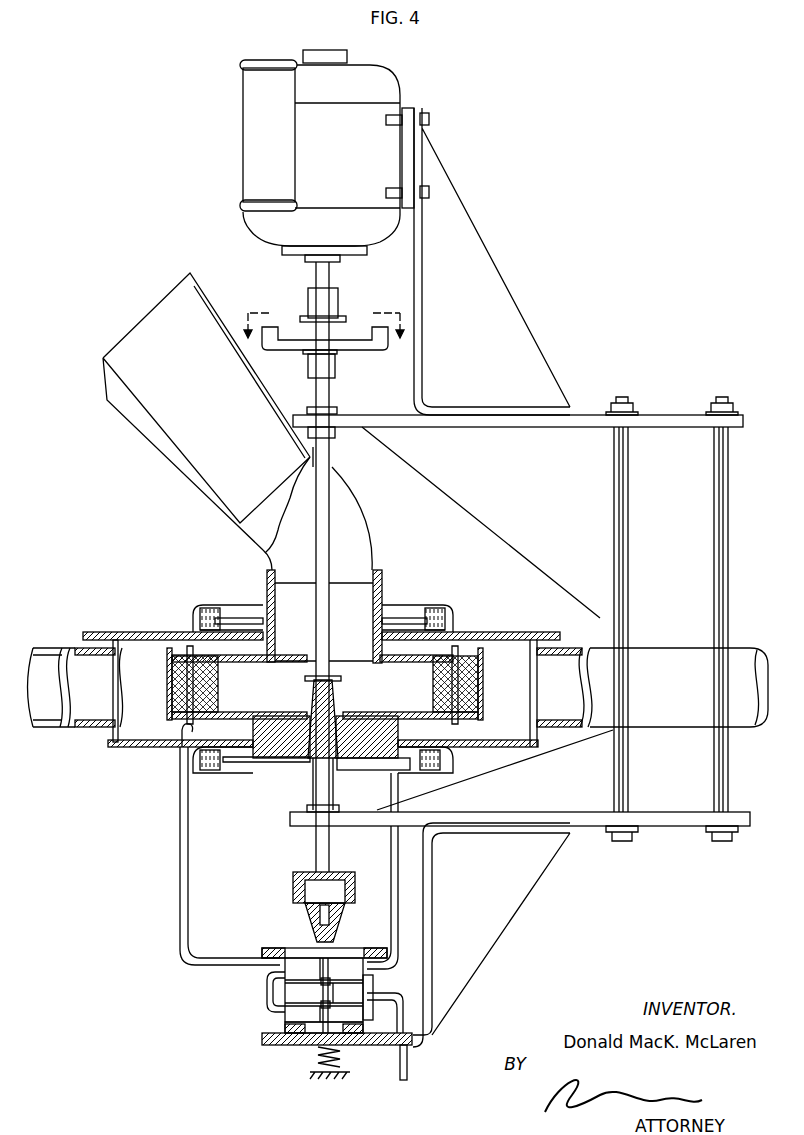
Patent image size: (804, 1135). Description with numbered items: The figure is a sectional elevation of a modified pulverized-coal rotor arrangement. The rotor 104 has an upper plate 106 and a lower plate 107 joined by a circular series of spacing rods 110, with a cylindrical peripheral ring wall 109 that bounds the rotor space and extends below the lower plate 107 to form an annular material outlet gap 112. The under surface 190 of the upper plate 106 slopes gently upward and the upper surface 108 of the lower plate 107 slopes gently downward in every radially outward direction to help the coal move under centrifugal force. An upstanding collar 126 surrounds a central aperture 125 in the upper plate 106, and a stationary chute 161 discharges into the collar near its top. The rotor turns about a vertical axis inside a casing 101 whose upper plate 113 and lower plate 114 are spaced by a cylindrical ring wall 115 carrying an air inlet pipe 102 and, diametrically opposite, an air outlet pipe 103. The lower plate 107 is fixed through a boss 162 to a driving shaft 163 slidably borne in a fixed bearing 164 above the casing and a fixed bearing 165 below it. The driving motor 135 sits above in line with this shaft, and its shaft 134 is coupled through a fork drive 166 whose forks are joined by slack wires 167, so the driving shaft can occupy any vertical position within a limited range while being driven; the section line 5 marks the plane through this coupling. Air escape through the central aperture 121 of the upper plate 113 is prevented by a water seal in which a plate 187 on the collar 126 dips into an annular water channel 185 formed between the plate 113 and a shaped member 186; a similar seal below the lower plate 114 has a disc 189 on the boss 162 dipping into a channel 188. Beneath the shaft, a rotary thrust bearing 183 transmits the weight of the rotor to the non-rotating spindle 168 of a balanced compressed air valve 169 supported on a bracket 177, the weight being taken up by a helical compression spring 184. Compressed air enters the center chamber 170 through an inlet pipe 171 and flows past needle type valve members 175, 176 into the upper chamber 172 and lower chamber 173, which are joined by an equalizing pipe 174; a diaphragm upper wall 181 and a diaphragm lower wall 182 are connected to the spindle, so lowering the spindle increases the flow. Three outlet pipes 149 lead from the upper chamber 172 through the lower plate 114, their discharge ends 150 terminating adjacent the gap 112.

The driving motor 135 is at (378, 88).
The motor shaft 134 is at (318, 276).
The section line 5- 5 is at (323, 314).
The fork drive 166 is at (349, 324).
The wires 167 is at (308, 332).
The fixed bearing 164 is at (338, 413).
The stationary chute 161 is at (148, 402).
The upstanding collar 126 is at (270, 582).
The central aperture 125 is at (288, 660).
The casing 101 is at (132, 632).
The casing upper plate 113 is at (157, 631).
The air outlet pipe 103 is at (60, 660).
The cylindrical peripheral ring wall 115 is at (112, 736).
The casing lower plate 114 is at (141, 748).
The cylindrical peripheral ring wall 109 is at (168, 669).
The spacing rods 110 is at (182, 687).
The rotor upper plate 106 is at (235, 661).
The rotor lower plate 107 is at (240, 717).
The central aperture 121 is at (380, 643).
The annular water channel 185 is at (455, 618).
The shaped member 186 is at (440, 607).
The plate 187 is at (396, 617).
The air inlet pipe 102 is at (600, 656).
The under surface 190 is at (428, 665).
The rotor 104 is at (488, 691).
The annular material outlet gap 112 is at (470, 717).
The upper surface 108 is at (395, 713).
The boss 162 is at (280, 759).
The driving shaft 163 is at (315, 785).
The disc 189 is at (388, 767).
The channel 188 is at (456, 763).
The discharge ends 150 is at (175, 735).
The outlet pipes 149 is at (180, 858).
The fixed bearing 165 is at (307, 827).
The rotary thrust bearing 183 is at (292, 889).
The diaphragm upper wall 181 is at (306, 953).
The compressed air valve 169 is at (385, 981).
The upper chamber 172 is at (292, 977).
The center chamber 170 is at (336, 1000).
The lower chamber 173 is at (292, 1021).
The needle type valve member 175 is at (332, 978).
The needle type valve member 176 is at (381, 1004).
The spindle 168 is at (280, 995).
The equalizing pipe 174 is at (267, 1003).
The diaphragm lower wall 182 is at (300, 1041).
The helical compression spring 184 is at (338, 1054).
The inlet pipe 171 is at (408, 1065).
The bracket 177 is at (515, 883).